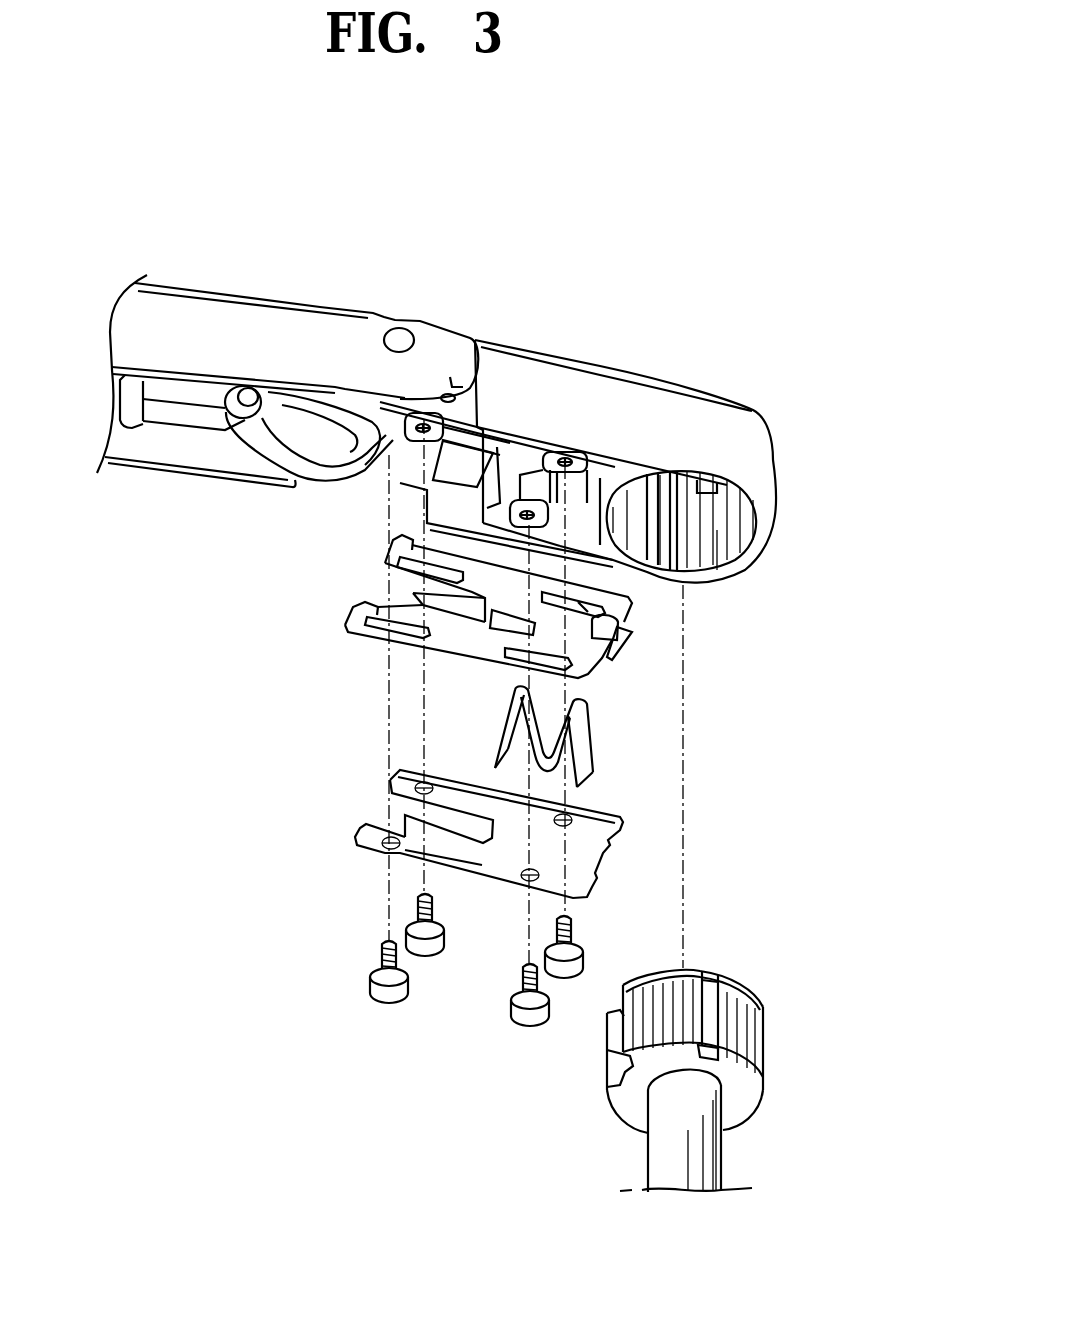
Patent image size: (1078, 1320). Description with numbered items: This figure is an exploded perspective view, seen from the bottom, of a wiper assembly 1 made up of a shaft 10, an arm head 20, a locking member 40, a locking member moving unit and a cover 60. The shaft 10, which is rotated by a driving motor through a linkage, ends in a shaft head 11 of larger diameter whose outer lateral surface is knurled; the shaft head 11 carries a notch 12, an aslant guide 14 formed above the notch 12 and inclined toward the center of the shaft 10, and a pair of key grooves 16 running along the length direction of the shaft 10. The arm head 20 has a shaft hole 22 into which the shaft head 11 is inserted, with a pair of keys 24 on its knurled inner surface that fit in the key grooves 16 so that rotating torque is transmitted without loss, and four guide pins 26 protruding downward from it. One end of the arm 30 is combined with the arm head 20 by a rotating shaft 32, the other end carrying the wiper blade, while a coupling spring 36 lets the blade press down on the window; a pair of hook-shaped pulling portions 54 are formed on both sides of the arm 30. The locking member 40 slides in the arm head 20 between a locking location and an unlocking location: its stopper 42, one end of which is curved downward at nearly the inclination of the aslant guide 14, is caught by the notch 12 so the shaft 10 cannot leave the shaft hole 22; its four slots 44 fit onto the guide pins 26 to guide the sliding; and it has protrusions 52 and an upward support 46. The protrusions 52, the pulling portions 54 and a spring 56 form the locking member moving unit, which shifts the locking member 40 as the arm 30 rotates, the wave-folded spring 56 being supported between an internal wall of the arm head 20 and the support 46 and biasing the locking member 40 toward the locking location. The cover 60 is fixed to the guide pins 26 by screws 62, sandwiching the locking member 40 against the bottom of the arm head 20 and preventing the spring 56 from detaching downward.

The wiper assembly 1 is at (200, 212).
The shaft 10 is at (635, 1168).
The shaft head 11 is at (754, 1003).
The notch 12 is at (612, 1080).
The aslant guide 14 is at (617, 1022).
The key grooves 16 is at (708, 970).
The arm head 20 is at (611, 352).
The shaft hole 22 is at (707, 552).
The keys 24 is at (757, 428).
The guide pins 26 is at (529, 508).
The arm 30 is at (310, 295).
The rotating shaft 32 is at (400, 328).
The coupling spring 36 is at (259, 442).
The locking member 40 is at (437, 648).
The stopper 42 is at (630, 640).
The slots 44 is at (397, 568).
The support 46 is at (598, 640).
The protrusions 52 is at (397, 537).
The pulling portions 54 is at (486, 338).
The spring 56 is at (593, 738).
The cover 60 is at (413, 848).
The screws 62 is at (424, 948).